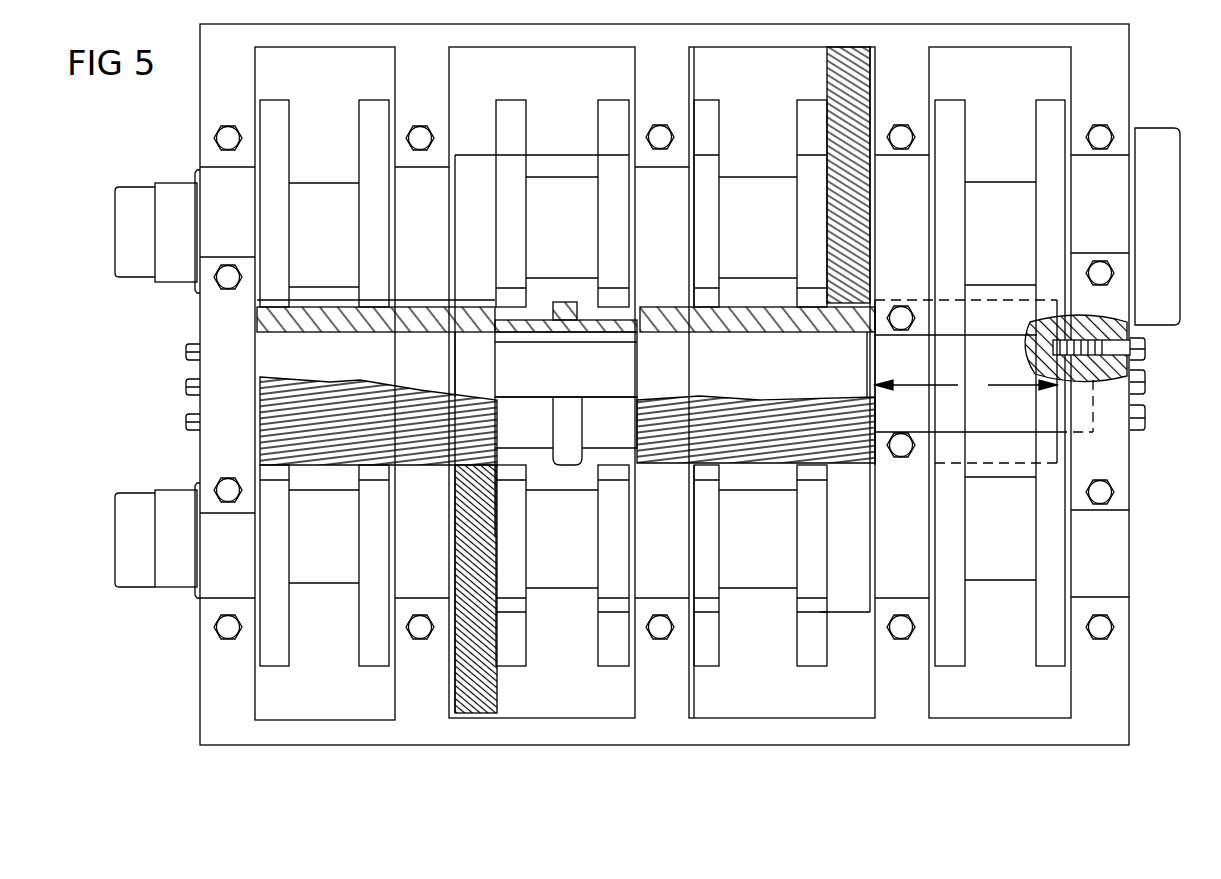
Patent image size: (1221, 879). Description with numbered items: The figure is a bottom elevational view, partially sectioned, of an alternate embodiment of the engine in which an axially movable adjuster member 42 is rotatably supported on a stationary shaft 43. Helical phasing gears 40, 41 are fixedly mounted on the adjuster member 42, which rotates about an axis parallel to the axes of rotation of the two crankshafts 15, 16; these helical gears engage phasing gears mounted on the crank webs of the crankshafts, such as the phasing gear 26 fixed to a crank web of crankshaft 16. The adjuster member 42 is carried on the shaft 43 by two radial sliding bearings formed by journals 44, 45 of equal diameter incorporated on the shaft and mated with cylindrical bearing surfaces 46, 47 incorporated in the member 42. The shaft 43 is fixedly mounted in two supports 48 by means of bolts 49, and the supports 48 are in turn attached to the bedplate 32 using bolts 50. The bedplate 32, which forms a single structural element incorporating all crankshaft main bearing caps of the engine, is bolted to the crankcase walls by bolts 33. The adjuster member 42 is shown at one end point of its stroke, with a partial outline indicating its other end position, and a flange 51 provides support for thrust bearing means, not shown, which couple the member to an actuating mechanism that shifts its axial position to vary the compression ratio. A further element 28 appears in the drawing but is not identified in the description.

The crankshaft 15 is at (563, 570).
The crankshaft 16 is at (752, 185).
The phasing gear 26 is at (830, 66).
The guide block 28 is at (487, 693).
The bedplate 32 is at (890, 688).
The bolts 33 is at (215, 138).
The helical phasing gear 40 is at (345, 452).
The helical phasing gear 41 is at (768, 455).
The axially movable adjuster member 42 is at (595, 430).
The stationary shaft 43 is at (985, 345).
The journal 44 is at (480, 378).
The journal 45 is at (855, 355).
The cylindrical bearing surface 46 is at (372, 342).
The cylindrical bearing surface 47 is at (745, 338).
The support 48 is at (210, 330).
The bolts 49 is at (180, 390).
The bolts 50 is at (222, 285).
The flange 51 is at (566, 455).